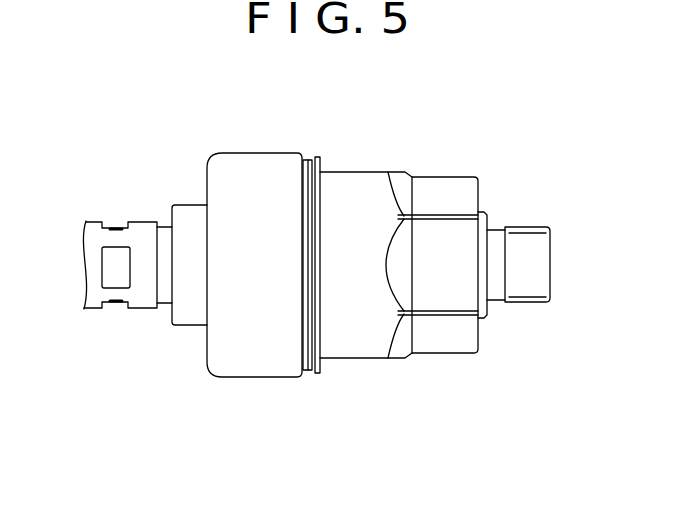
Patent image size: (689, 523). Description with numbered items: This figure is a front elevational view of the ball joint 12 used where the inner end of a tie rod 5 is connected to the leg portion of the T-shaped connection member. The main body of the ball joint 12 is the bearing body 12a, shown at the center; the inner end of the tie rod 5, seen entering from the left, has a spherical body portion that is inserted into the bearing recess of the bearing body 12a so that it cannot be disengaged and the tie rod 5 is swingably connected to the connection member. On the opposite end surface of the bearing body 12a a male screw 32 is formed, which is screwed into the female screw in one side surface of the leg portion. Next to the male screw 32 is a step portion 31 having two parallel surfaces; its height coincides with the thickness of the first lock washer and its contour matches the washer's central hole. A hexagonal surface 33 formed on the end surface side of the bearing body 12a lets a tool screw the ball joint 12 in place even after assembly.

The tie rod 5 is at (91, 308).
The ball joint 12 is at (364, 240).
The bearing body 12a is at (270, 172).
The step portion 31 is at (488, 222).
The male screw 32 is at (530, 302).
The hexagonal surface 33 is at (445, 353).